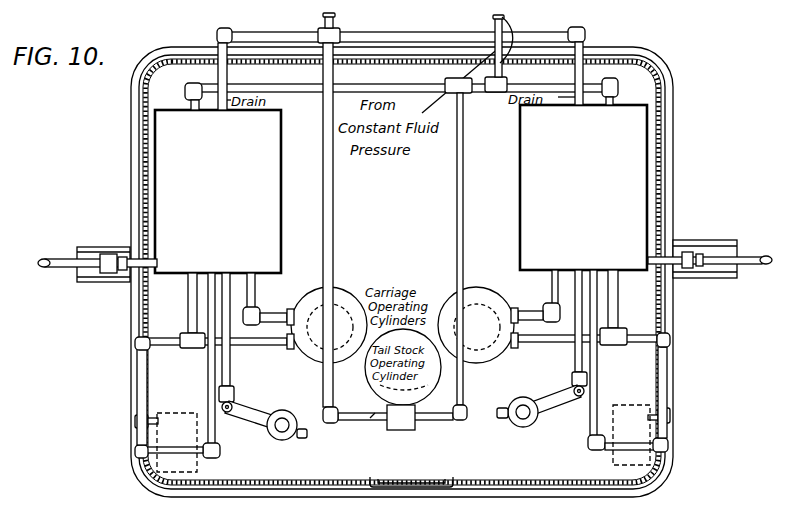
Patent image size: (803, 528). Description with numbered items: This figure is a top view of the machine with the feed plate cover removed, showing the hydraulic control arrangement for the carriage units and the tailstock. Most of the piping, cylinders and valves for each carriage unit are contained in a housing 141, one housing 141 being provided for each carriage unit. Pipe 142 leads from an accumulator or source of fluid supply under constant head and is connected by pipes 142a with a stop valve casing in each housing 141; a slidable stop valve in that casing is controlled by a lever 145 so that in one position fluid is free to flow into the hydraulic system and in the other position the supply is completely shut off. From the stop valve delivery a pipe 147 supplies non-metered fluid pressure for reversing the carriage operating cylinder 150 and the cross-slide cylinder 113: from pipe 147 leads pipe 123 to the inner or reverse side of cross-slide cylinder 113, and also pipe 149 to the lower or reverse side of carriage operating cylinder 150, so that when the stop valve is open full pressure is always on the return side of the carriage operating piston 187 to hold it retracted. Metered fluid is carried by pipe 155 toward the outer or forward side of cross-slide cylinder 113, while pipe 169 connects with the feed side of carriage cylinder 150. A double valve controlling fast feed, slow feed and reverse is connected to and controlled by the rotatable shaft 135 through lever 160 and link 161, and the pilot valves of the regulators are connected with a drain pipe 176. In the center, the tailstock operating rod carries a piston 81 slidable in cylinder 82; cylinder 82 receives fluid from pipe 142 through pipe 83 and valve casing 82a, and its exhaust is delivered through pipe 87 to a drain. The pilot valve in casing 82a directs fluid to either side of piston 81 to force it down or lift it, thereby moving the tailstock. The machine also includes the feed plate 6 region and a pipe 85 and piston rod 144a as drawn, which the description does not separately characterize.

The frame 6 is at (572, 482).
The cross-slide cylinder 113 is at (180, 478).
The housing 141 is at (401, 189).
The pipe 142 is at (495, 24).
The pipes 142a is at (190, 102).
The drain pipe 176 is at (322, 22).
The carriage operating cylinder 150 is at (349, 302).
The carriage operating piston 187 is at (320, 283).
The piston 81 is at (432, 385).
The vertical pipe 85 is at (463, 187).
The cylinder 82 is at (388, 429).
The valve casing 82a is at (402, 426).
The pipe 83 is at (437, 421).
The pipe 87 is at (370, 418).
The pipe 169 is at (274, 314).
The pipe 149 is at (247, 341).
The pipe 147 is at (192, 312).
The pipe 155 is at (210, 388).
The link 161 is at (232, 375).
The lever 160 is at (247, 414).
The rotatable shaft 135 is at (283, 432).
The pipe 123 is at (403, 438).
The lever 145 is at (60, 268).
The piston rod 144a is at (155, 263).